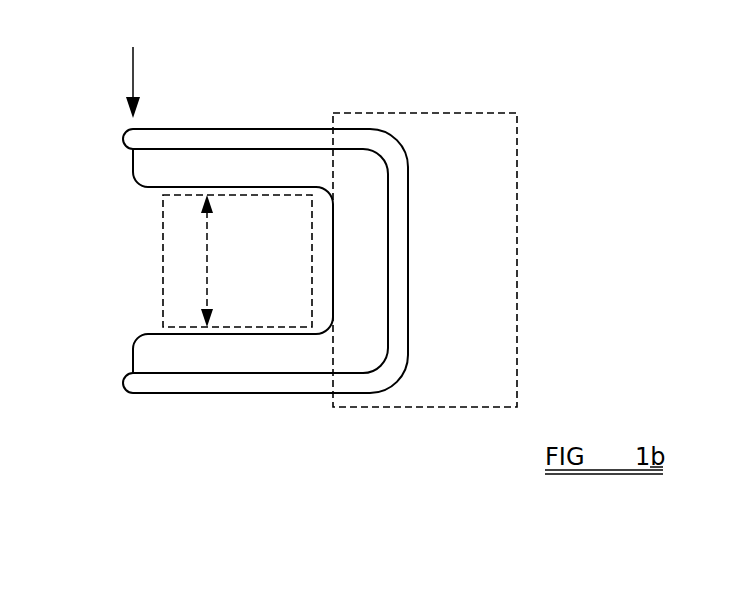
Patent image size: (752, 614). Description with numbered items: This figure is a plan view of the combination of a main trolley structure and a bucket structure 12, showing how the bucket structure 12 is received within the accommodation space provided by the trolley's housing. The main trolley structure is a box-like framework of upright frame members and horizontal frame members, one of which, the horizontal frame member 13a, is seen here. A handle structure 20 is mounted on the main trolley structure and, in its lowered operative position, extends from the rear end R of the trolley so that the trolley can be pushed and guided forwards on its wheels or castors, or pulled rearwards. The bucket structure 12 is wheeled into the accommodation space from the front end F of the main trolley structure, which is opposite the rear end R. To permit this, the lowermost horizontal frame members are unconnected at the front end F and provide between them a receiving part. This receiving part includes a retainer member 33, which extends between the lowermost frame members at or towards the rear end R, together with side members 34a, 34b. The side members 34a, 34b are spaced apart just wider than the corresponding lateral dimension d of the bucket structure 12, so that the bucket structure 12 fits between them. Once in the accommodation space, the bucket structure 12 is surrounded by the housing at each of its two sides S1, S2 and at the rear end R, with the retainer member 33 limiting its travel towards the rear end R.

The bucket structure 12 is at (237, 273).
The horizontal frame member 13a is at (275, 387).
The handle structure 20 is at (472, 113).
The retainer member 33 is at (359, 273).
The side member 34a is at (250, 167).
The side member 34b is at (178, 350).
The upper spring strip S1 is at (206, 142).
The lower spring strip S2 is at (190, 383).
The rear end R is at (408, 227).
The front end F is at (133, 67).
The lateral dimension d is at (207, 261).